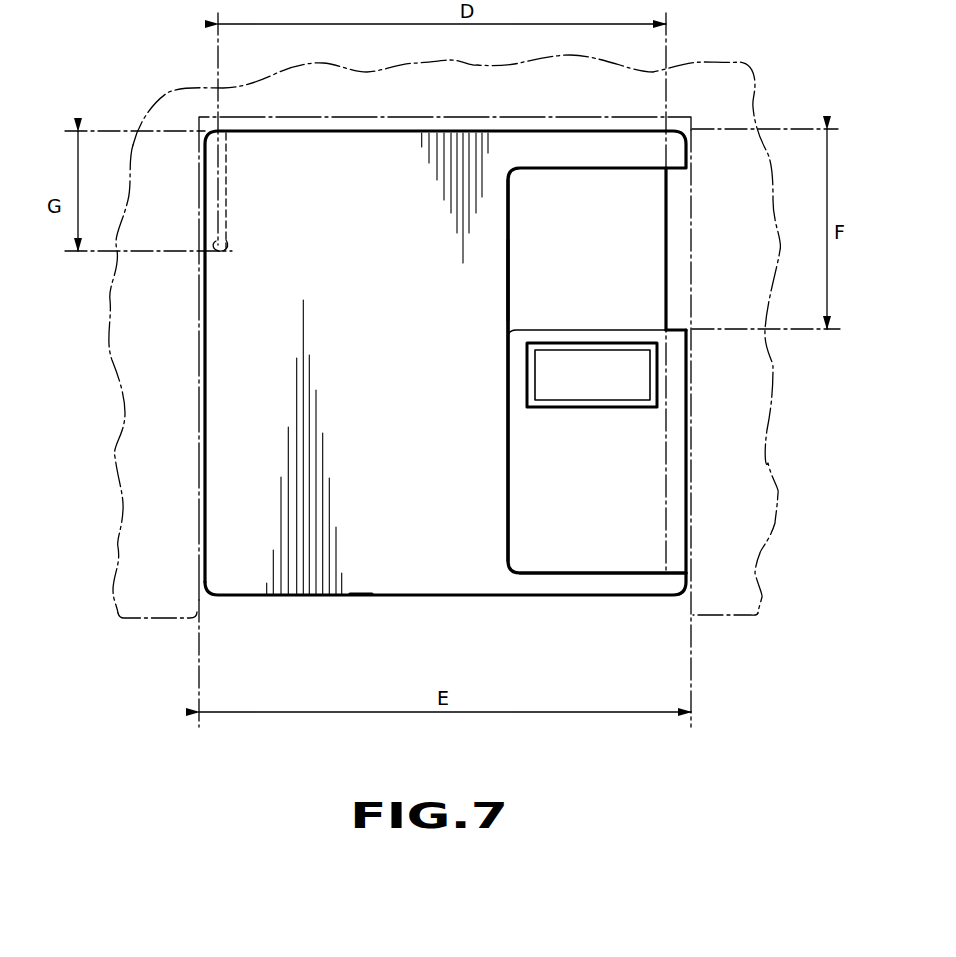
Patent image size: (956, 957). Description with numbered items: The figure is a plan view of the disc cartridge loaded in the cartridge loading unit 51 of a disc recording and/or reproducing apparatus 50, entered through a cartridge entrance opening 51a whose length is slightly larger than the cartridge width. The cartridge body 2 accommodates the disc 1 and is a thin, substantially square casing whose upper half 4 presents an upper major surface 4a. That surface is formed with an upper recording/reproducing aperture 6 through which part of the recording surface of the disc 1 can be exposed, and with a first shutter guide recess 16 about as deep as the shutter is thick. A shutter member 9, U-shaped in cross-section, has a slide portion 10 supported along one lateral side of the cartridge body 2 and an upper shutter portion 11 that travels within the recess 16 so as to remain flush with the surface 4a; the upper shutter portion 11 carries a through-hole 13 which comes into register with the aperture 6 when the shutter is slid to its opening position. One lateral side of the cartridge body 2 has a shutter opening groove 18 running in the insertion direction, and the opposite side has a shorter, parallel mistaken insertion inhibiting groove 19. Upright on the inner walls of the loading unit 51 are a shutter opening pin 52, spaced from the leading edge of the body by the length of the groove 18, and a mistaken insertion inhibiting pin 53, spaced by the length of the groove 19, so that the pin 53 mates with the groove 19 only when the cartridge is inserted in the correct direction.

The disc 1 is at (627, 367).
The cartridge body 2 is at (218, 533).
The upper half 4 is at (275, 597).
The upper major surface 4a is at (360, 582).
The upper recording/reproducing aperture 6 is at (617, 397).
The shutter member 9 is at (505, 488).
The slide portion 10 is at (694, 503).
The upper shutter portion 11 is at (598, 553).
The through-hole 13 is at (528, 377).
The first shutter guide recess 16 is at (508, 268).
The shutter opening groove 18 is at (667, 217).
The mistaken insertion inhibiting groove 19 is at (226, 182).
The disc recording and/or reproducing apparatus 50 is at (167, 607).
The cartridge loading unit 51 is at (200, 357).
The cartridge entrance opening 51a is at (692, 613).
The shutter opening pin 52 is at (668, 327).
The mistaken insertion inhibiting pin 53 is at (218, 247).